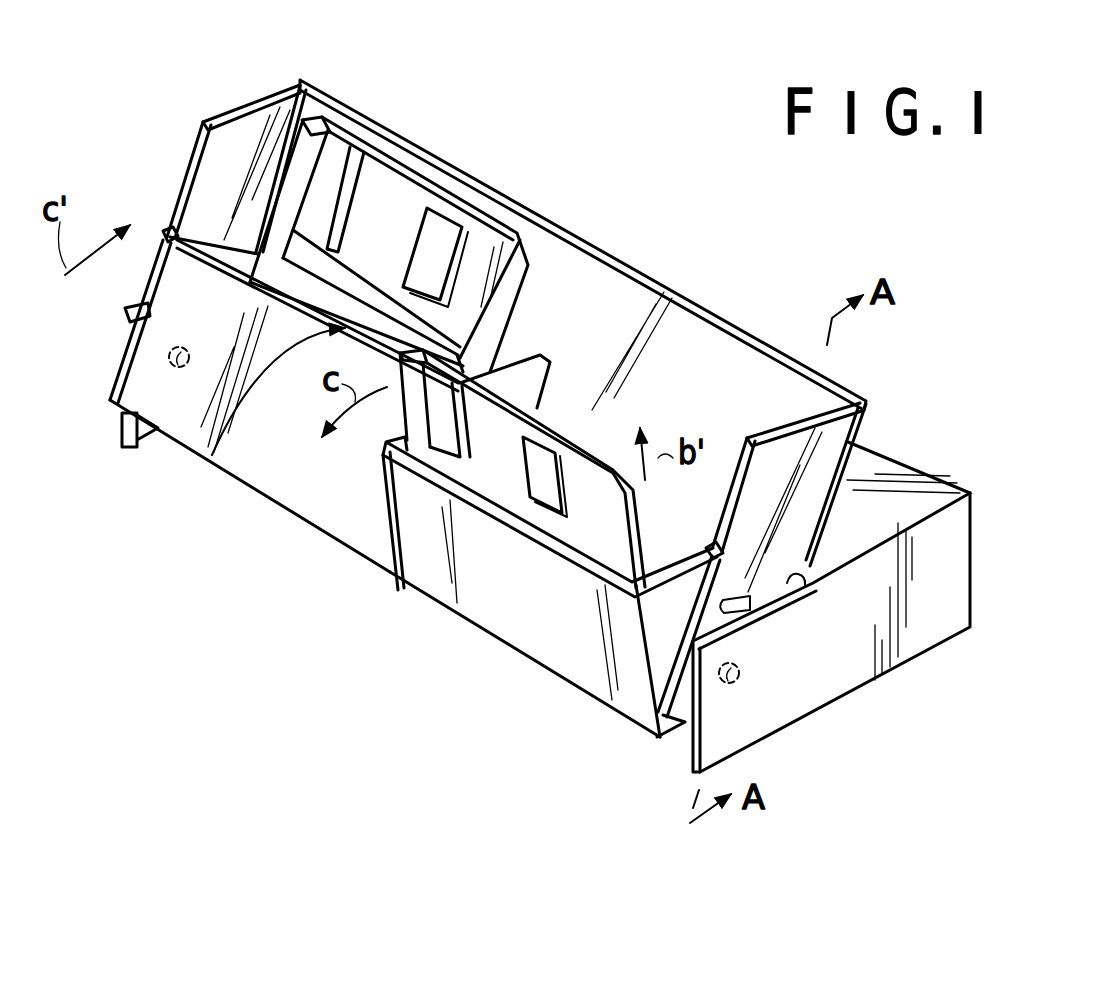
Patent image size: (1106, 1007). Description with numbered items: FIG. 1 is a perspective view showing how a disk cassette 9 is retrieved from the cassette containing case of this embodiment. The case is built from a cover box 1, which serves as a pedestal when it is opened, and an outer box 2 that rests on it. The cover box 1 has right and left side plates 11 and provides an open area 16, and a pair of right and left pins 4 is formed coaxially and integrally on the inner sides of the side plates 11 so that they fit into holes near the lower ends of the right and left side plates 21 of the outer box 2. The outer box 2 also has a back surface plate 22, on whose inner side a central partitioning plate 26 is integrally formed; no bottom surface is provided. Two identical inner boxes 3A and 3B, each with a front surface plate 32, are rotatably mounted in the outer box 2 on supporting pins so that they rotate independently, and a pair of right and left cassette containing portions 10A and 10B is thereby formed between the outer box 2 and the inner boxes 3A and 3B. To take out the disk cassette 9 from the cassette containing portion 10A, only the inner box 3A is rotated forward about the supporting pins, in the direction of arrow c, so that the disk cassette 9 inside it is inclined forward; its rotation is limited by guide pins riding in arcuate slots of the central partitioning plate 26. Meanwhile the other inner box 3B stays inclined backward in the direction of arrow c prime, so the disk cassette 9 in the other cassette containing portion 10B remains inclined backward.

The cover box 1 is at (583, 537).
The outer box 2 is at (561, 323).
The inner box 3A is at (462, 638).
The inner box 3B is at (247, 493).
The pins 4 is at (738, 684).
The disk cassette 9 is at (402, 200).
The cassette containing portion 10A is at (612, 553).
The cassette containing portion 10B is at (349, 375).
The right and left side plates 11 is at (849, 632).
The open area 16 is at (807, 582).
The right and left side plates 21 is at (223, 120).
The back surface plate 22 is at (720, 316).
The central partitioning plate 26 is at (530, 353).
The front surface plate 32 is at (342, 514).